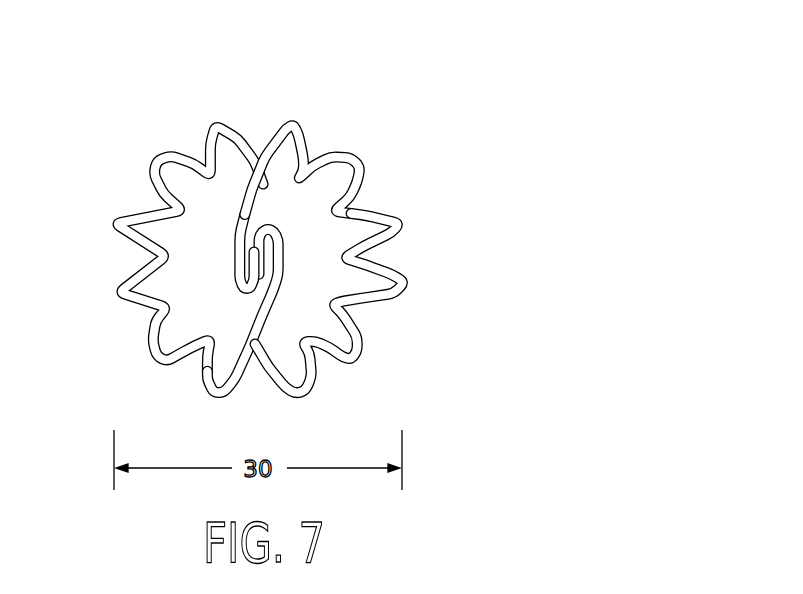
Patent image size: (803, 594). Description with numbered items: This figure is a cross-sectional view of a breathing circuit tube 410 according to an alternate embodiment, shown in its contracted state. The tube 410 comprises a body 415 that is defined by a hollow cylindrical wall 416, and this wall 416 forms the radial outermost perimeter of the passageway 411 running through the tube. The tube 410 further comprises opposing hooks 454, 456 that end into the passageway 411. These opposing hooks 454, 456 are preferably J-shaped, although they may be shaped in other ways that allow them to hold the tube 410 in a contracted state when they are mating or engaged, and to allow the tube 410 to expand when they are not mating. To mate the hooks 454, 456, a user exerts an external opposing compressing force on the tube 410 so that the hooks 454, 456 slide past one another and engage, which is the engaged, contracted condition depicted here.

The breathing circuit tube 410 is at (258, 221).
The passageway 411 is at (172, 237).
The body 415 is at (386, 292).
The hollow cylindrical wall 416 is at (340, 152).
The hook 454 is at (283, 250).
The hook 456 is at (235, 262).